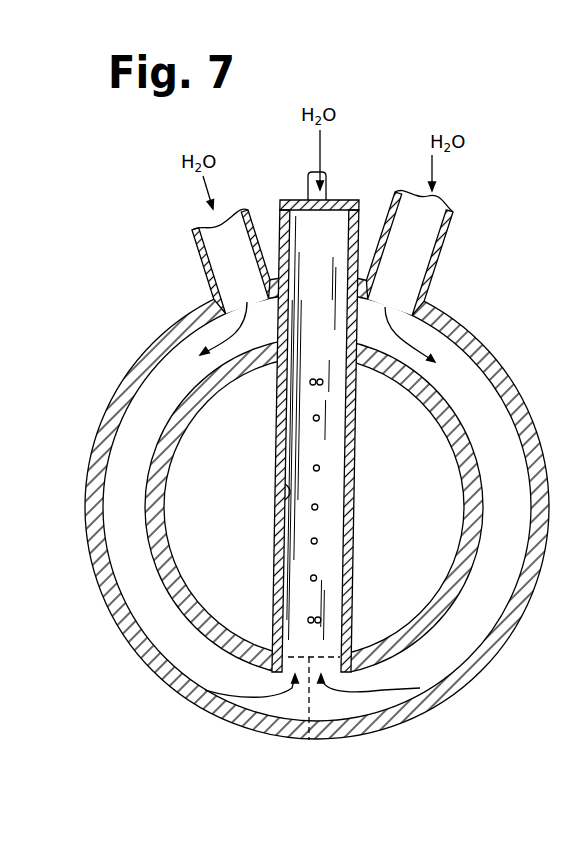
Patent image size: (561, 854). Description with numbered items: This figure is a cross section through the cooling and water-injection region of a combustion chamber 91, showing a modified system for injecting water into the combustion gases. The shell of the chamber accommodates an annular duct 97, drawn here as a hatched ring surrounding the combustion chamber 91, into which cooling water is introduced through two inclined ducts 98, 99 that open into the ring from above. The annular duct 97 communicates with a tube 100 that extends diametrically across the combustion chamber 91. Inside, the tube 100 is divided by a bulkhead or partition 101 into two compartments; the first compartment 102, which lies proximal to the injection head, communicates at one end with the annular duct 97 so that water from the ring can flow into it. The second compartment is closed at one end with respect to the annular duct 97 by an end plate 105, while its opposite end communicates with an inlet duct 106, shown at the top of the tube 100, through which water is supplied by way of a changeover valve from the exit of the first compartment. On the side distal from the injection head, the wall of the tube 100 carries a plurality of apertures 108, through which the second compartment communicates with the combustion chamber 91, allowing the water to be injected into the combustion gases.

The annular duct 97 is at (104, 543).
The combustion chamber 91 is at (205, 577).
The duct 98 is at (193, 247).
The duct 99 is at (446, 246).
The tube 100 is at (312, 439).
The bulkhead or partition 101 is at (304, 438).
The first compartment 102 is at (292, 499).
The apertures 108 is at (323, 538).
The inlet duct 106 is at (324, 183).
The end plate 105 is at (311, 740).